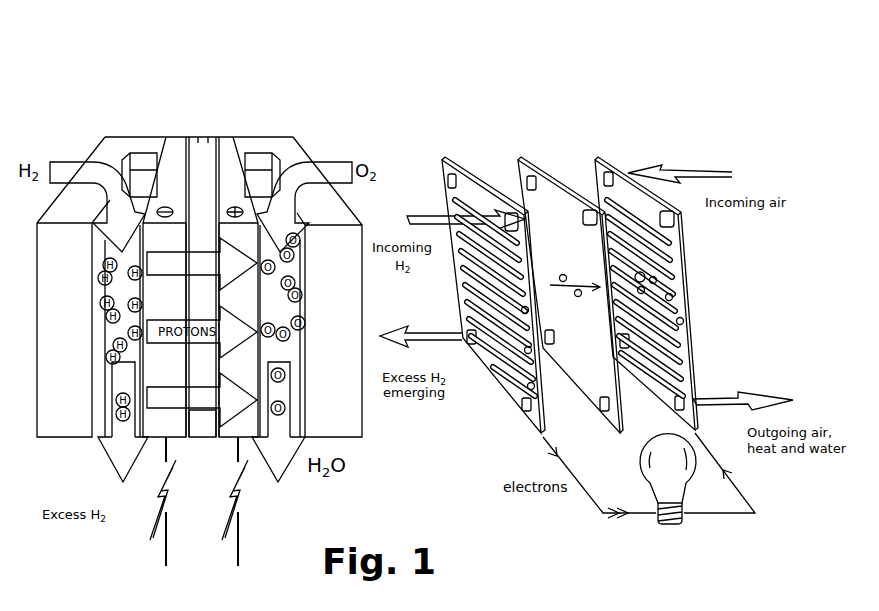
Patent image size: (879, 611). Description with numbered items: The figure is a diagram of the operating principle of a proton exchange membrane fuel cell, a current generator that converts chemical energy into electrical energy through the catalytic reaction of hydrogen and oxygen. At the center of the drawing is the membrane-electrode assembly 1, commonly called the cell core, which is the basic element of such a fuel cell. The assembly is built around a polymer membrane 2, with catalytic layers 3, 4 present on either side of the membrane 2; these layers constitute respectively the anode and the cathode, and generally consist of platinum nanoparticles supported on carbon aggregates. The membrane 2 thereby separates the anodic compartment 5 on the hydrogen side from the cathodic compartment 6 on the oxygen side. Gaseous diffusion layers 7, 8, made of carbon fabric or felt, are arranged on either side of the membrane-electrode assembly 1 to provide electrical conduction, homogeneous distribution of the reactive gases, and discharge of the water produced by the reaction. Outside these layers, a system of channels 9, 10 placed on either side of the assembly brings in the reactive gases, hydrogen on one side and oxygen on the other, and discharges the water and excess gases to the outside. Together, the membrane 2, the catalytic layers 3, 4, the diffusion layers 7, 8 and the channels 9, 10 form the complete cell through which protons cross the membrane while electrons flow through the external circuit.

The membrane-electrode assembly 1 is at (228, 62).
The polymer membrane 2 is at (199, 143).
The catalytic layer 3 is at (186, 137).
The catalytic layer 4 is at (214, 137).
The anodic compartment 5 is at (187, 125).
The cathodic compartment 6 is at (293, 125).
The gaseous diffusion layer 7 is at (157, 294).
The gaseous diffusion layer 8 is at (245, 308).
The channel 9 is at (107, 410).
The channel 10 is at (293, 413).